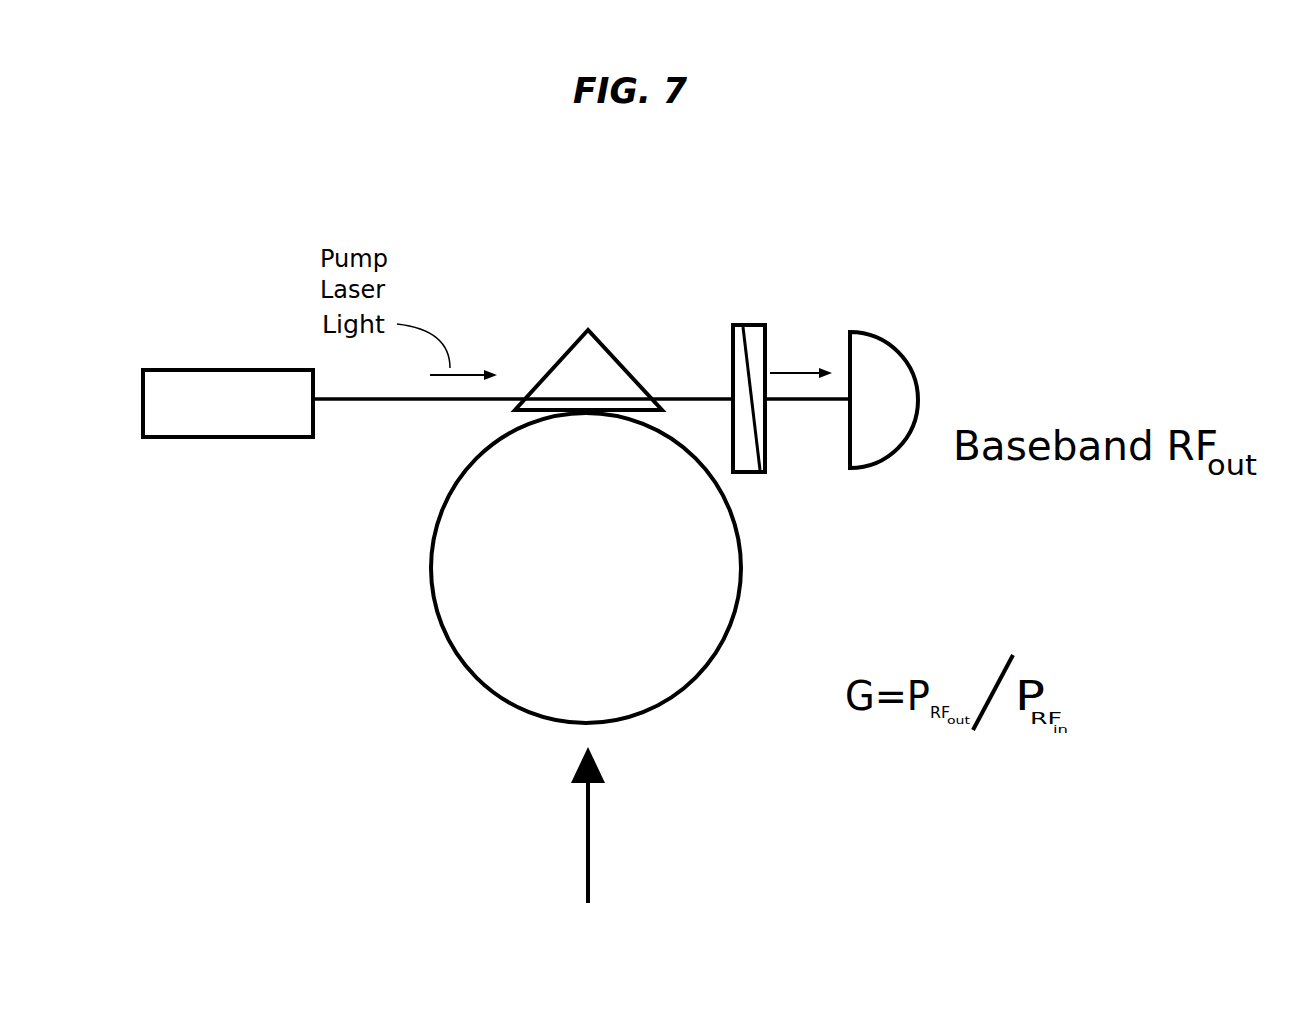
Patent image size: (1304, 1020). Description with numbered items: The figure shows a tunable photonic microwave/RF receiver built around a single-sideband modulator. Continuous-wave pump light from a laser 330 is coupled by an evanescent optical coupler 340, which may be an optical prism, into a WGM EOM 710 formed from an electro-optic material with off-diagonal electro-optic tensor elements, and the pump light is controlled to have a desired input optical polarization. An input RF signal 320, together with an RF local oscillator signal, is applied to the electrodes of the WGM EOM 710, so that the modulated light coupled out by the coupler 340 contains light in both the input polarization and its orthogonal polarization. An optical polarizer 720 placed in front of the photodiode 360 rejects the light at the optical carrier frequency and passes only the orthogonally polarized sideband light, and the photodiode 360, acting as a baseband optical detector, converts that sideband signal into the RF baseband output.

The laser 330 is at (280, 437).
The evanescent optical coupler 340 is at (560, 353).
The optical polarizer 720 is at (760, 349).
The photodetector 360 is at (920, 372).
The WGM EOM 710 is at (607, 630).
The input RF signal 320 is at (585, 810).